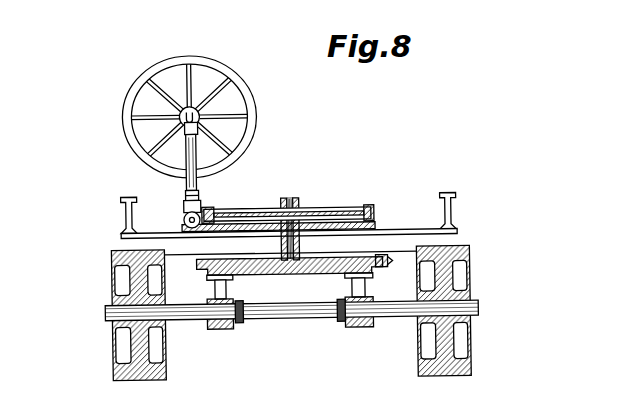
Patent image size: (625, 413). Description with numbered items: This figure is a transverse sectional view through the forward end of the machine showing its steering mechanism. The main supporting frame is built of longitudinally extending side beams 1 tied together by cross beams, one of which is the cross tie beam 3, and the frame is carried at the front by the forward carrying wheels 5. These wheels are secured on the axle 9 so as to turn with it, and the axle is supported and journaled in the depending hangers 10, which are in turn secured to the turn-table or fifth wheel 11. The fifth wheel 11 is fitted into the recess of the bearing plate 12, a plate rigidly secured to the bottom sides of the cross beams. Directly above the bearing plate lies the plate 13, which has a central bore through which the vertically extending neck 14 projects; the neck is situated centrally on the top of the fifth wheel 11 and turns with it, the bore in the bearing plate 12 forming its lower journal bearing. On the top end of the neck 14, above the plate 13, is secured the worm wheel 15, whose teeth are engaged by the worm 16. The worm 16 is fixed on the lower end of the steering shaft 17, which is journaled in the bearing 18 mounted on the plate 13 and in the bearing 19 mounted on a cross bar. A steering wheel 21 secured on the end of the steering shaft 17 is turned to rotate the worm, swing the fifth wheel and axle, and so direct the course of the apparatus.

The side beams 1 is at (128, 215).
The cross tie beam 3 is at (130, 238).
The forward carrying wheels 5 is at (112, 370).
The axle 9 is at (290, 322).
The depending hangers 10 is at (228, 331).
The fifth wheel 11 is at (283, 268).
The bearing plate 12 is at (393, 264).
The plate 13 is at (186, 227).
The neck 14 is at (299, 199).
The worm wheel 15 is at (369, 209).
The worm 16 is at (185, 207).
The steering shaft 17 is at (203, 118).
The bearing 18 is at (205, 194).
The bearing 19 is at (200, 137).
The steering wheel 21 is at (125, 119).